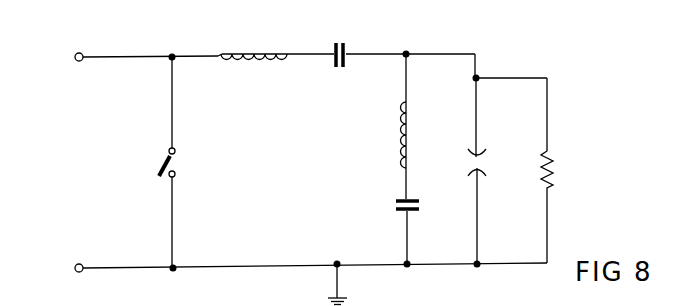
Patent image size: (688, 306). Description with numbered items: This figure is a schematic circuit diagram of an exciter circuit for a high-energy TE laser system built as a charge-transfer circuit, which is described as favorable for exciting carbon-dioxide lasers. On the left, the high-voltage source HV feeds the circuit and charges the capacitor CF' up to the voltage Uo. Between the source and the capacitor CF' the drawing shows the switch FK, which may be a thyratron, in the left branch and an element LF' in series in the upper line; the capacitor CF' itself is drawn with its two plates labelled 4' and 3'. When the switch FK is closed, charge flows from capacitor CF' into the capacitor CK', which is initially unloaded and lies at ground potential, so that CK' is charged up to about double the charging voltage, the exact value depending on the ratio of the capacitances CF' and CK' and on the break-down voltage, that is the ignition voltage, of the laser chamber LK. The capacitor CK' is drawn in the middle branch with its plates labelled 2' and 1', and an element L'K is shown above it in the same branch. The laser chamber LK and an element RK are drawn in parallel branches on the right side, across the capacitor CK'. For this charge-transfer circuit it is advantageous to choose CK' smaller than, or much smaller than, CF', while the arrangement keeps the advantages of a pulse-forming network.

The high-voltage source HV is at (85, 165).
The switch FK is at (160, 177).
The filter inductor LF' is at (252, 34).
The capacitor CF' is at (351, 33).
The capacitor plate 4' is at (316, 40).
The capacitor plate 3' is at (363, 47).
The inductor L'K is at (430, 135).
The capacitor CK' is at (383, 210).
The capacitor plate 2' is at (418, 189).
The capacitor plate 1' is at (417, 225).
The laser chamber LK is at (484, 161).
The resistor RK is at (556, 170).